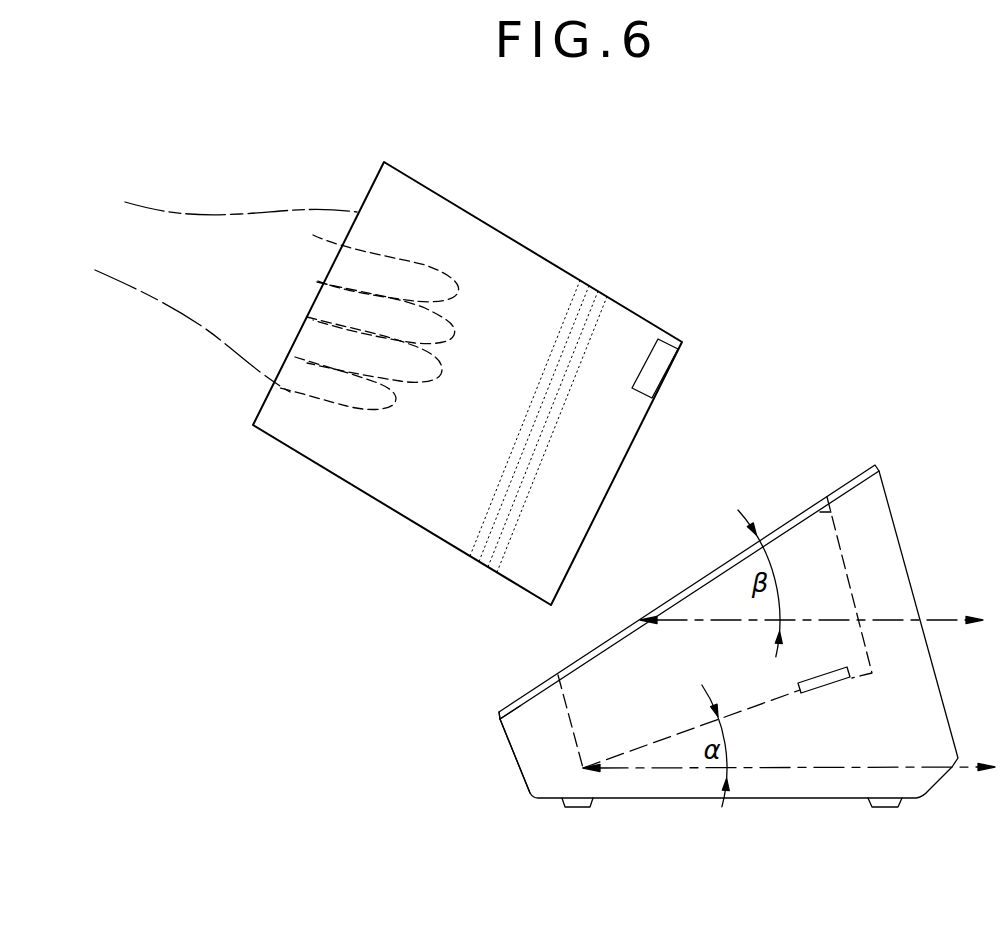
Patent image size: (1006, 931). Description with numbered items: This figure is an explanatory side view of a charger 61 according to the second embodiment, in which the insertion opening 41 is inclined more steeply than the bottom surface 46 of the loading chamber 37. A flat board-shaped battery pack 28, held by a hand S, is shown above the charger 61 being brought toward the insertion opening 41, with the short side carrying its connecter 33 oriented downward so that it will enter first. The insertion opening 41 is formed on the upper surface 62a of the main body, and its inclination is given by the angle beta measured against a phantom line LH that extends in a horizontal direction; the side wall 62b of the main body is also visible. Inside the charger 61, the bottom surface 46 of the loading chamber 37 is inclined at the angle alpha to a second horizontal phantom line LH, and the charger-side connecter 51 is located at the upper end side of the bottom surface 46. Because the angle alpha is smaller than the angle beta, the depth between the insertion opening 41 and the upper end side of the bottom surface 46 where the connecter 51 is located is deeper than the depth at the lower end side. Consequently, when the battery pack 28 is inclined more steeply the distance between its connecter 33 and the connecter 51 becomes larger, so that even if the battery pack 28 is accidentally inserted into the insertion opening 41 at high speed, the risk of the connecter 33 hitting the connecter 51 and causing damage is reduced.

The subject's hand S is at (237, 212).
The battery pack 28 is at (452, 203).
The connecter 33 is at (643, 370).
The loading chamber 37 is at (839, 533).
The insertion opening 41 is at (807, 508).
The bottom surface 46 is at (670, 737).
The connecter 51 is at (826, 685).
The charger 61 is at (397, 756).
The upper surface 62a is at (515, 702).
The side wall of housing 62b is at (515, 762).
The phantom line LH is at (949, 619).